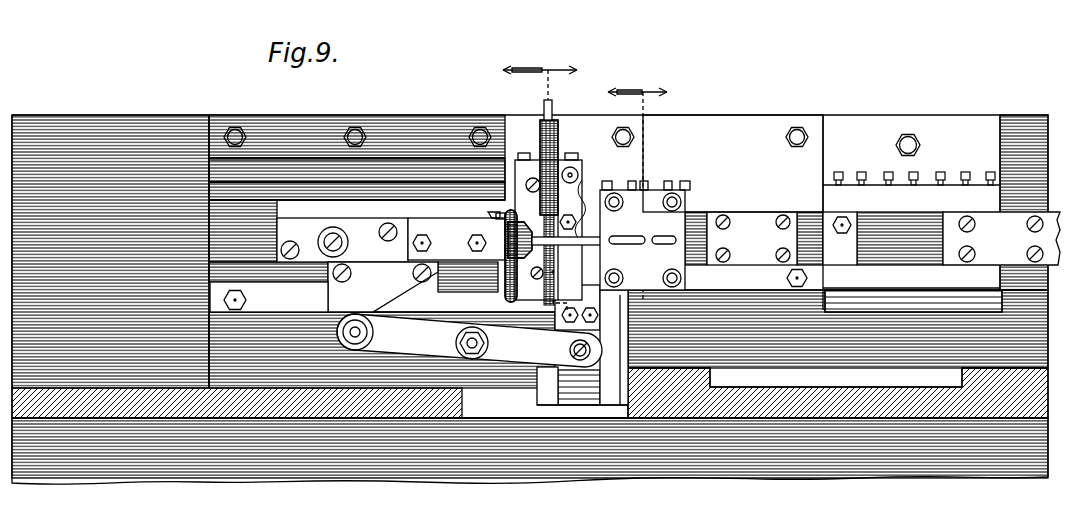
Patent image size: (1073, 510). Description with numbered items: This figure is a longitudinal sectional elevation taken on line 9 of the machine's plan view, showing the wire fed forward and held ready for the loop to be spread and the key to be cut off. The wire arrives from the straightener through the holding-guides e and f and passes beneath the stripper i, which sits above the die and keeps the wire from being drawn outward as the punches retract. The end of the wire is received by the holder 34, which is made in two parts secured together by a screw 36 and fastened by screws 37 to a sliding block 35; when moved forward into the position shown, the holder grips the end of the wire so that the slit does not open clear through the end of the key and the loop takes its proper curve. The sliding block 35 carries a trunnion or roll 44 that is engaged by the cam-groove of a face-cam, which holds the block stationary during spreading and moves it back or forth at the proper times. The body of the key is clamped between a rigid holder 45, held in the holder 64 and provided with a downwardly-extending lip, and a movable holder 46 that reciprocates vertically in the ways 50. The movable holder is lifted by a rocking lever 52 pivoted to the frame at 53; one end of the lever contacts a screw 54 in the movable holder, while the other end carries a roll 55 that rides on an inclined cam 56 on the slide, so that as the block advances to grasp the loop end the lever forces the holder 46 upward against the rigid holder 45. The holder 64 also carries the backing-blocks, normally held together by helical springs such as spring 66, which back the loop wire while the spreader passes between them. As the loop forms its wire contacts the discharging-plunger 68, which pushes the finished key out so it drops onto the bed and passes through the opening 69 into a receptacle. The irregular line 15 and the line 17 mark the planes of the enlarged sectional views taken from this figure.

The section line 9 is at (765, 218).
The irregular section line 15 is at (540, 83).
The section line 17 is at (637, 184).
The holder 34 is at (446, 232).
The sliding block 35 is at (383, 212).
The screw 36 is at (488, 215).
The screws 37 is at (468, 243).
The trunnion or roll 44 is at (331, 227).
The rigid holder 45 is at (578, 232).
The movable holder 46 is at (553, 274).
The ways 50 is at (582, 345).
The rocking lever 52 is at (469, 340).
The pivot 53 is at (472, 328).
The screw 54 is at (628, 351).
The roll 55 is at (340, 328).
The inclined cam 56 is at (383, 287).
The holder 64 is at (733, 163).
The helical spring 66 is at (556, 141).
The discharging-plunger 68 is at (582, 176).
The opening 69 is at (495, 400).
The stripper i is at (645, 235).
The guide f is at (840, 238).
The guide e is at (1001, 238).